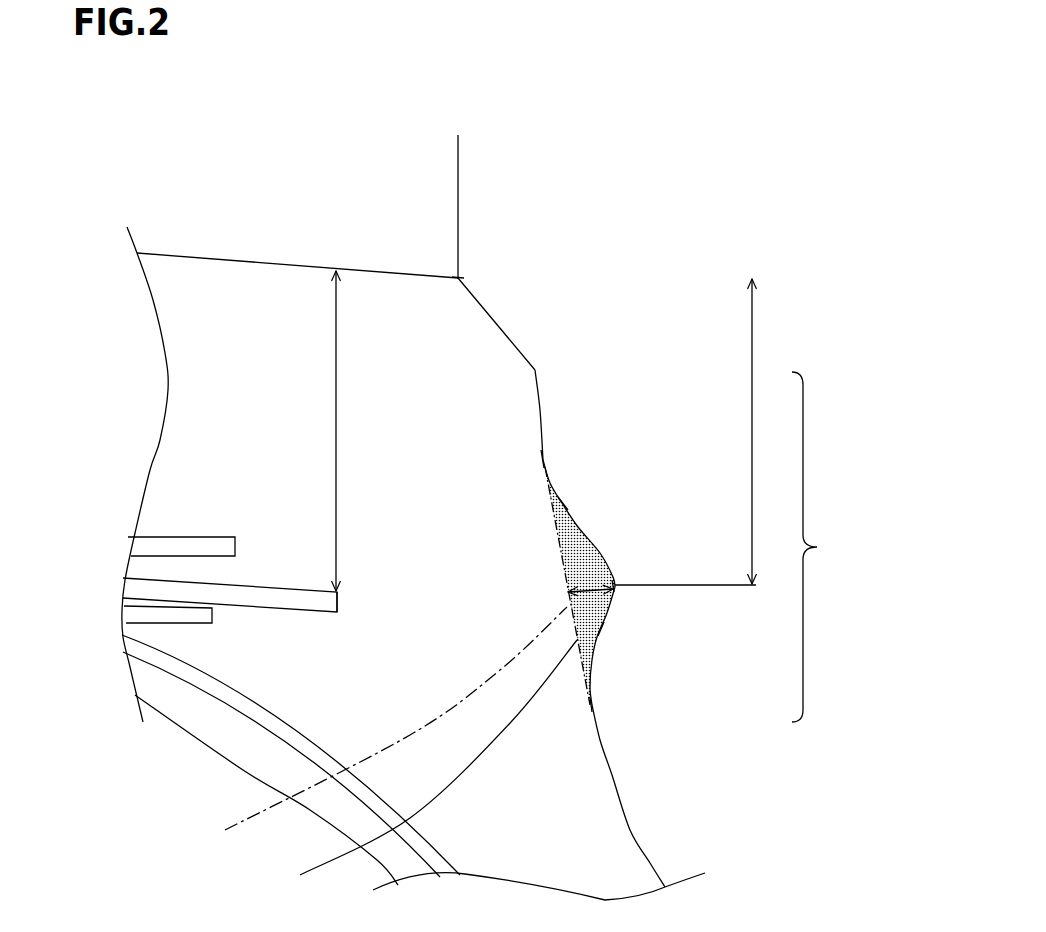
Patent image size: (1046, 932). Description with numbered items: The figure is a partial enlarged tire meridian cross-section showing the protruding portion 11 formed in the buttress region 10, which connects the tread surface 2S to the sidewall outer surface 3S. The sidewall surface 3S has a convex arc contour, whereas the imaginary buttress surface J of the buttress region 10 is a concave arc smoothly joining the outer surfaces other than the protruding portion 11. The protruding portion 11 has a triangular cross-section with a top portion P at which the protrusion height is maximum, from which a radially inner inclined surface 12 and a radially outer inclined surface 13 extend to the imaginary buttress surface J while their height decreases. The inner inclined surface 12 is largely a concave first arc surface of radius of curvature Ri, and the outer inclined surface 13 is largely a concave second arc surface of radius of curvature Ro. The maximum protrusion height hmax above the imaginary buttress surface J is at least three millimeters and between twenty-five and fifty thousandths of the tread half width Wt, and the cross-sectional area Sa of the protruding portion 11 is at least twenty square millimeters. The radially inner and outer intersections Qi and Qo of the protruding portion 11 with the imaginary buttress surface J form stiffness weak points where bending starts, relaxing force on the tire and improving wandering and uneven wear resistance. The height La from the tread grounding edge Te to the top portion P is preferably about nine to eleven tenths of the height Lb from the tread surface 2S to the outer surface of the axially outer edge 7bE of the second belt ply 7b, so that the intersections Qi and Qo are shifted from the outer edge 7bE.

The tread surface 2S is at (204, 256).
The tread half width Wt is at (457, 147).
The tread grounding edge Te is at (458, 277).
The height from tread grounding edge to top portion La is at (752, 328).
The height from tread surface to belt ply outer edge Lb is at (355, 431).
The buttress region 10 is at (821, 547).
The protruding portion 11 is at (622, 603).
The radially inner inclined surface 12 is at (592, 657).
The radially outer inclined surface 13 is at (585, 537).
The outer surface of sidewall portion 3S is at (640, 826).
The radially outer intersection Qo is at (553, 457).
The radius of curvature of second arc surface Ro is at (566, 501).
The top portion P is at (615, 587).
The radius of curvature of first arc surface Ri is at (602, 631).
The radially inner intersection Qi is at (598, 713).
The maximum protrusion height hmax is at (605, 584).
The second belt ply 7b is at (273, 600).
The axially outer edge of second belt ply 7bE is at (332, 587).
The imaginary buttress surface J is at (383, 727).
The cross-sectional area of protruding portion Sa is at (417, 765).